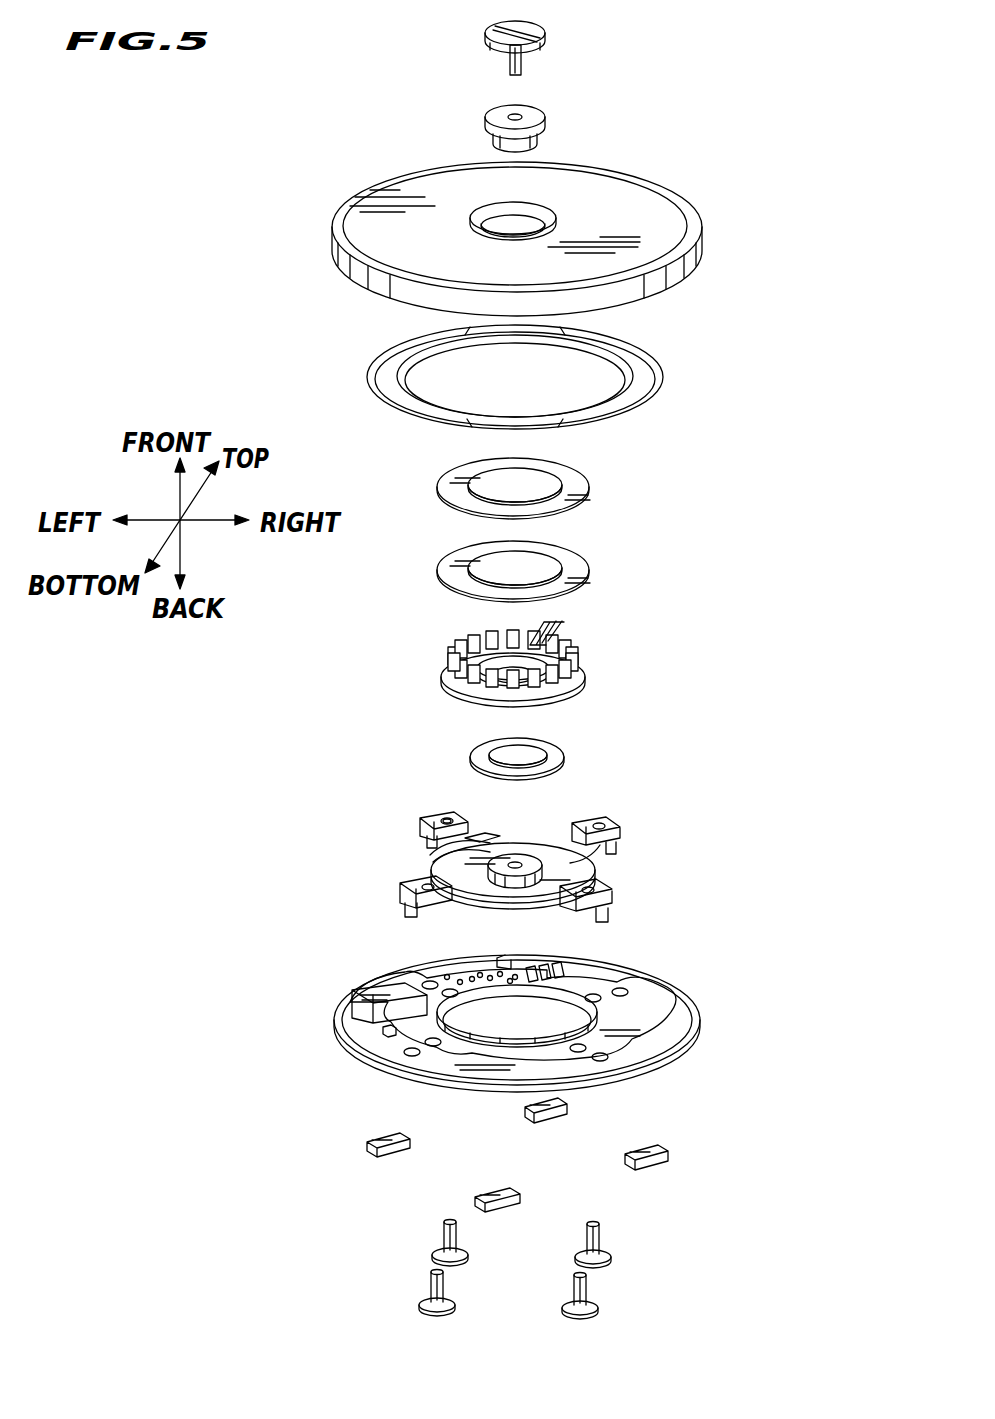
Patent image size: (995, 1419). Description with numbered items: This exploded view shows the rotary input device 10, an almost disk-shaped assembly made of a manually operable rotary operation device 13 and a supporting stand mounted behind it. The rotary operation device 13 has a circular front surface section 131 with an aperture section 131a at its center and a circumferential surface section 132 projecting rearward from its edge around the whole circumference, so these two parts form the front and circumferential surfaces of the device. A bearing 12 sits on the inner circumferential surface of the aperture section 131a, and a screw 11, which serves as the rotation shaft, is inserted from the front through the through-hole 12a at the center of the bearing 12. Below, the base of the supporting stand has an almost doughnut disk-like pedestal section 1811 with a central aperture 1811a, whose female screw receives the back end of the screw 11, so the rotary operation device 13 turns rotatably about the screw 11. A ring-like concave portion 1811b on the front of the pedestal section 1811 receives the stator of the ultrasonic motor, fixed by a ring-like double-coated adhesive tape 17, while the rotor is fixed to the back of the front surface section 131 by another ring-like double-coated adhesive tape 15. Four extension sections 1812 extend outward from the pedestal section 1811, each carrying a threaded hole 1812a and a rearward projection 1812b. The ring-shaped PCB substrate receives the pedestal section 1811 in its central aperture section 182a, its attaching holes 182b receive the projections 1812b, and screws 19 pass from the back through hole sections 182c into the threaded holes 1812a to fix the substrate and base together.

The rotary input device 10 is at (380, 72).
The screw 11 is at (534, 30).
The bearing 12 is at (518, 109).
The through-hole 12a is at (511, 114).
The rotary operation device 13 is at (479, 220).
The front surface section 131 is at (384, 201).
The aperture section 131a is at (508, 232).
The circumferential surface section 132 is at (333, 254).
The double-coated adhesive tape 15 is at (592, 483).
The double-coated adhesive tape 17 is at (562, 752).
The pedestal section 1811 is at (511, 845).
The aperture 1811a is at (520, 862).
The ring-like concave portion 1811b is at (470, 866).
The extension section 1812 is at (416, 822).
The threaded hole 1812a is at (450, 822).
The projection 1812b is at (430, 845).
The aperture section 182a is at (543, 1018).
The attaching hole 182b is at (404, 1050).
The hole section 182c is at (432, 1044).
The screw 19 is at (457, 1233).